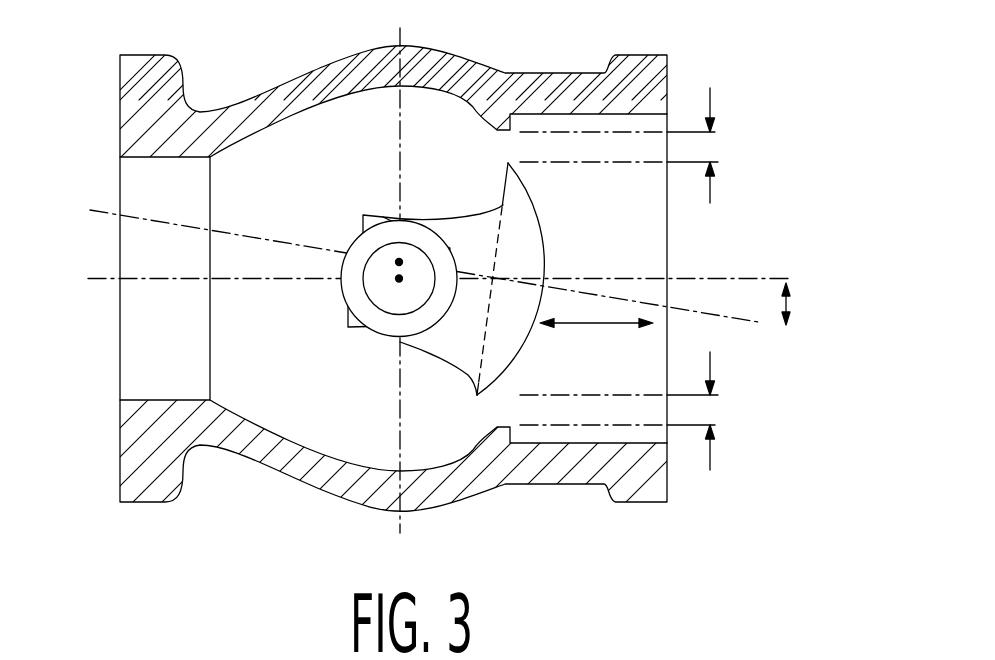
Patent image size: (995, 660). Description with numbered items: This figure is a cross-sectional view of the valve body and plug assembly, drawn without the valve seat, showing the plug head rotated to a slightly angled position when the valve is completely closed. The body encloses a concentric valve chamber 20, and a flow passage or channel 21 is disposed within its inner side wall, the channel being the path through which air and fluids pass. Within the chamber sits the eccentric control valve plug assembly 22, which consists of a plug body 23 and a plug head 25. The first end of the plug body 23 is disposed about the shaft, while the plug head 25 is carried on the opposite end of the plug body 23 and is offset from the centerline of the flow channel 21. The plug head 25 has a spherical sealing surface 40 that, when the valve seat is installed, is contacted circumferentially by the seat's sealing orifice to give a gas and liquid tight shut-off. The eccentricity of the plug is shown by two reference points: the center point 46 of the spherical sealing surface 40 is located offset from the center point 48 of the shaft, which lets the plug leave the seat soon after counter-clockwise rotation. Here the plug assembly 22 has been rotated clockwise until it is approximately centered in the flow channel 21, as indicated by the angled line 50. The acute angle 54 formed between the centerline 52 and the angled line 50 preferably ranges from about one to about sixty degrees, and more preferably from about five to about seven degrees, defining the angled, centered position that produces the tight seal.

The concentric valve chamber 20 is at (308, 196).
The flow passage or channel 21 is at (626, 327).
The eccentric control valve plug assembly 22 is at (442, 350).
The plug body 23 is at (392, 336).
The plug head 25 is at (541, 279).
The spherical sealing surface 40 is at (540, 246).
The center point of the spherical sealing surface 46 is at (398, 260).
The center point of the shaft 48 is at (397, 281).
The angled line 50 is at (763, 324).
The centerline 52 is at (102, 278).
The acute angle 54 is at (790, 308).